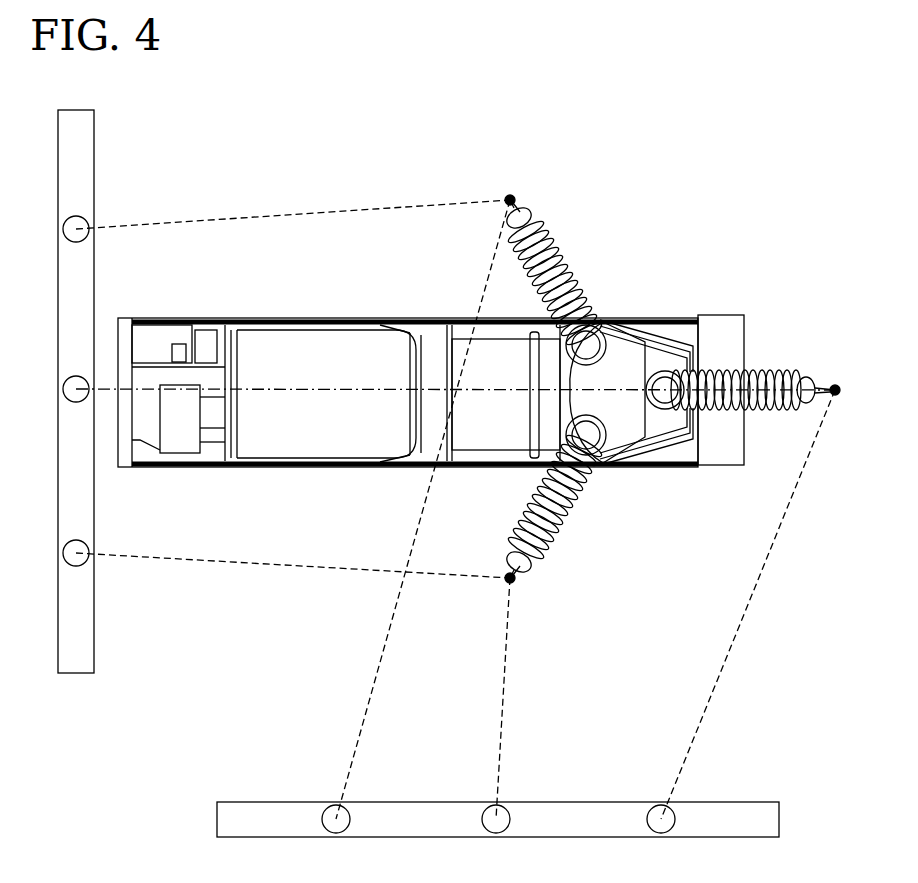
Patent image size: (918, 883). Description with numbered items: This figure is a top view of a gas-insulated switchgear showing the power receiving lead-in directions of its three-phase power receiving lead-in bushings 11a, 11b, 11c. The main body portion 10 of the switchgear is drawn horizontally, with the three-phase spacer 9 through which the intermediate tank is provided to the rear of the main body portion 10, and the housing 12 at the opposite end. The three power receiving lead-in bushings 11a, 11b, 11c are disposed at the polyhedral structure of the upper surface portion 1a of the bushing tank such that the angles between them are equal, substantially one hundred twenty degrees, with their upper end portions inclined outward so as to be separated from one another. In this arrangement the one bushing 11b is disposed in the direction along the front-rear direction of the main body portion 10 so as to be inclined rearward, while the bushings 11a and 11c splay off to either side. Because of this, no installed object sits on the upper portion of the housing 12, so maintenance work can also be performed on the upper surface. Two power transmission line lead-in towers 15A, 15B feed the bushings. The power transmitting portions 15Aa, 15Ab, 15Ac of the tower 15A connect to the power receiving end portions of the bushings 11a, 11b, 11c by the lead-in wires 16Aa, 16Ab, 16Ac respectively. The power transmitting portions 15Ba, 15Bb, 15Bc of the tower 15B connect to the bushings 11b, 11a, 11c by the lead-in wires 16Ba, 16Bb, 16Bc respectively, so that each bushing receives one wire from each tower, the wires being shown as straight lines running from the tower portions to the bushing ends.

The upper surface portion 1a is at (640, 331).
The three-phase spacer 9 is at (527, 430).
The main body portion 10 is at (303, 467).
The power receiving lead-in bushing 11a is at (562, 230).
The power receiving lead-in bushing 11b is at (770, 370).
The power receiving lead-in bushing 11c is at (573, 515).
The housing 12 is at (203, 468).
The power transmission line lead-in tower 15A is at (94, 262).
The power transmitting portion 15Aa is at (84, 226).
The power transmitting portion 15Ab is at (80, 400).
The power transmitting portion 15Ac is at (85, 568).
The power transmission line lead-in tower 15B is at (398, 801).
The power transmitting portion 15Ba is at (328, 806).
The power transmitting portion 15Bb is at (510, 808).
The power transmitting portion 15Bc is at (680, 808).
The lead-in wire 16Aa is at (310, 212).
The lead-in wire 16Ab is at (300, 390).
The lead-in wire 16Ac is at (336, 578).
The lead-in wire 16Ba is at (352, 762).
The lead-in wire 16Bb is at (500, 722).
The lead-in wire 16Bc is at (710, 712).